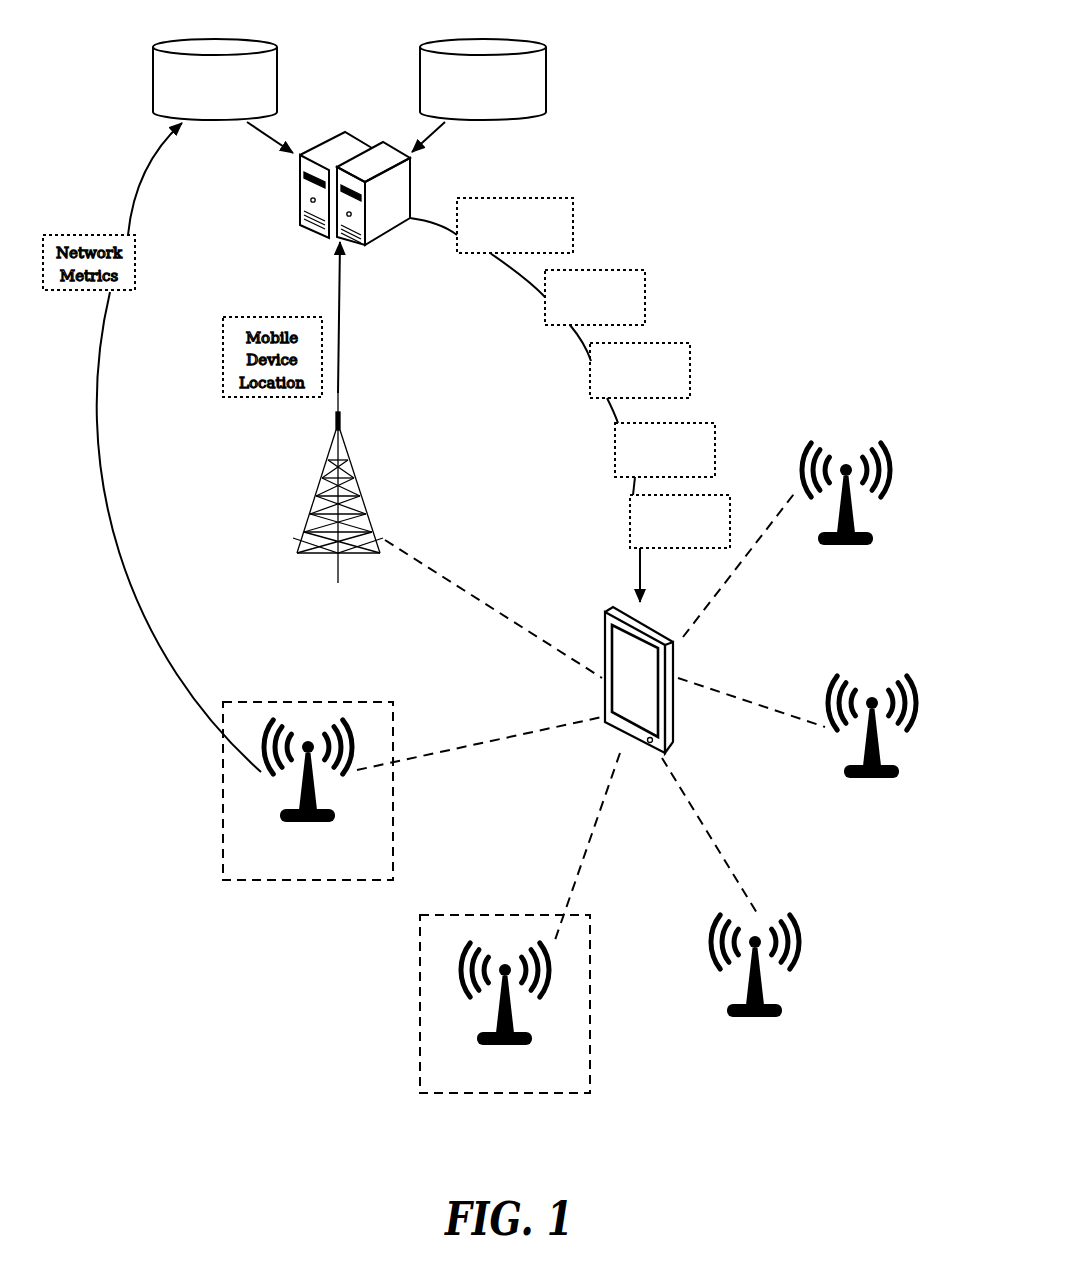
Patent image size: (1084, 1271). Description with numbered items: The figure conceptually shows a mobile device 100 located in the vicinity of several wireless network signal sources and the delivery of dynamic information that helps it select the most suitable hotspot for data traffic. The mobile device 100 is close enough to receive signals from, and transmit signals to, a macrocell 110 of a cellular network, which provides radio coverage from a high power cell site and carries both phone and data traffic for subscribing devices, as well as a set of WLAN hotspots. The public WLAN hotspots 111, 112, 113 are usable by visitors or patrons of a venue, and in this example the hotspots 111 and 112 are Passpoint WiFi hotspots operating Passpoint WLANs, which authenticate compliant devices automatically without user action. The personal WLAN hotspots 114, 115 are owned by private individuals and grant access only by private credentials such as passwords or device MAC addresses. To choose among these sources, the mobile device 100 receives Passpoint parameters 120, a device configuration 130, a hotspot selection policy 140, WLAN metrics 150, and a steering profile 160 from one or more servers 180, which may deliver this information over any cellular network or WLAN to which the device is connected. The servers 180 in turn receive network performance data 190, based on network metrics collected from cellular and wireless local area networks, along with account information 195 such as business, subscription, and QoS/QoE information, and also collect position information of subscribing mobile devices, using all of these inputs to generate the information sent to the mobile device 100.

The mobile device 100 is at (602, 640).
The macrocell 110 is at (295, 535).
The public WLAN hotspot 111 is at (265, 882).
The public WLAN hotspot 112 is at (463, 1095).
The public WLAN hotspot 113 is at (805, 913).
The personal WLAN hotspot 114 is at (920, 673).
The personal WLAN hotspot 115 is at (895, 442).
The Passpoint parameters 120 is at (573, 212).
The device configuration 130 is at (645, 283).
The hotspot selection policy 140 is at (690, 357).
The WLAN metrics 150 is at (715, 437).
The steering profile 160 is at (730, 508).
The servers 180 is at (318, 237).
The network performance data 190 is at (245, 37).
The account information 195 is at (512, 37).